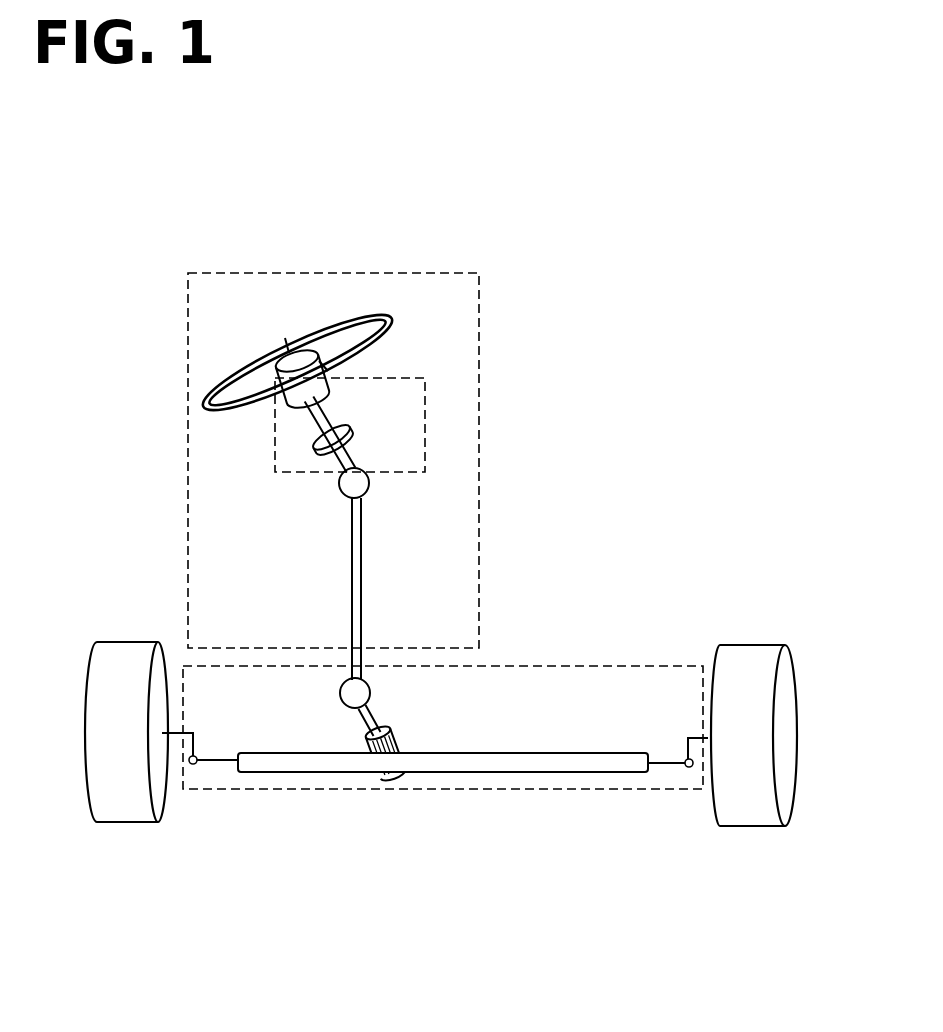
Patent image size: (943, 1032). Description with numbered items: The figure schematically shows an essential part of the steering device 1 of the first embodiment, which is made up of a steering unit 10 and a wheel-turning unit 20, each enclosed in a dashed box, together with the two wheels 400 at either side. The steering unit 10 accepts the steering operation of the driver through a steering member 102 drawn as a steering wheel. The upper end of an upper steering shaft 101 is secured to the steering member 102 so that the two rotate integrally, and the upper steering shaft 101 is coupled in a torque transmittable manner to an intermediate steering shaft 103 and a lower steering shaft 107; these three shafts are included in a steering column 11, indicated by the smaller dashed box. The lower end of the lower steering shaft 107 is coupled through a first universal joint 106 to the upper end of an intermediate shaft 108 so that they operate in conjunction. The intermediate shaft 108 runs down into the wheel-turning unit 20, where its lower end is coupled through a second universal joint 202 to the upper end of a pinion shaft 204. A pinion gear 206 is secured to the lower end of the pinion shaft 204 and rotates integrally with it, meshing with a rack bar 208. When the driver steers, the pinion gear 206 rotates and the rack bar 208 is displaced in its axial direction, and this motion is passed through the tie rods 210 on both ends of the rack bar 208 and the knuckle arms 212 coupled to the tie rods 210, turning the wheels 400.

The steering device 1 is at (508, 213).
The steering unit 10 is at (188, 425).
The steering column 11 is at (392, 378).
The wheel-turning unit 20 is at (552, 665).
The upper steering shaft 101 is at (328, 405).
The steering member 102 is at (393, 316).
The intermediate steering shaft 103 is at (333, 427).
The first universal joint 106 is at (370, 483).
The lower steering shaft 107 is at (352, 451).
The intermediate shaft 108 is at (361, 535).
The second universal joint 202 is at (340, 692).
The pinion shaft 204 is at (368, 731).
The pinion gear 206 is at (400, 742).
The rack bar 208 is at (557, 753).
The tie rods 210 is at (207, 762).
The knuckle arms 212 is at (187, 740).
The wheels 400 is at (115, 642).